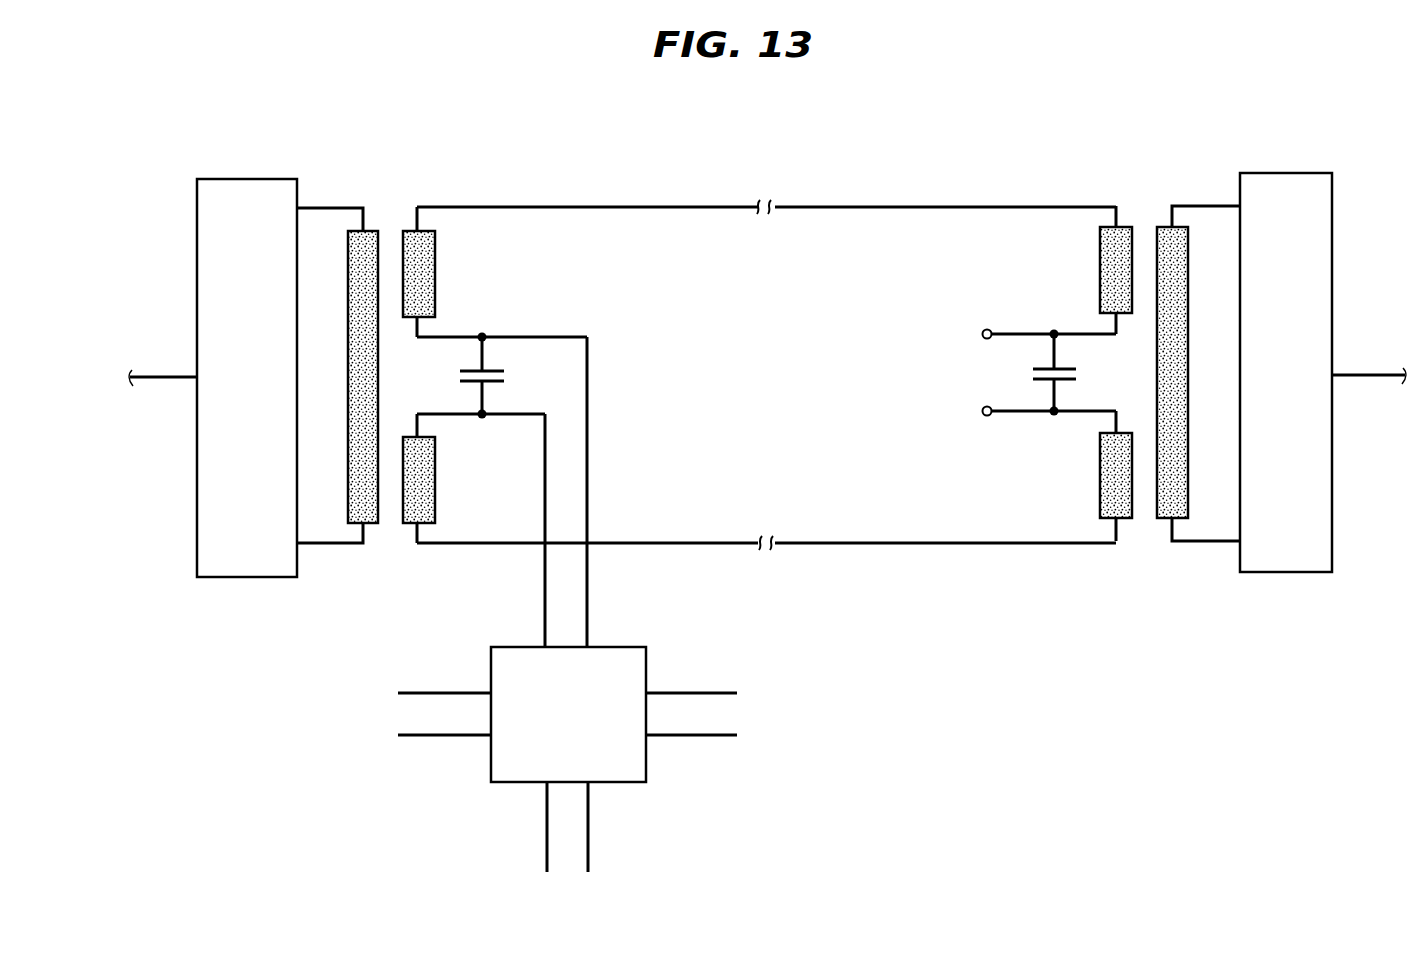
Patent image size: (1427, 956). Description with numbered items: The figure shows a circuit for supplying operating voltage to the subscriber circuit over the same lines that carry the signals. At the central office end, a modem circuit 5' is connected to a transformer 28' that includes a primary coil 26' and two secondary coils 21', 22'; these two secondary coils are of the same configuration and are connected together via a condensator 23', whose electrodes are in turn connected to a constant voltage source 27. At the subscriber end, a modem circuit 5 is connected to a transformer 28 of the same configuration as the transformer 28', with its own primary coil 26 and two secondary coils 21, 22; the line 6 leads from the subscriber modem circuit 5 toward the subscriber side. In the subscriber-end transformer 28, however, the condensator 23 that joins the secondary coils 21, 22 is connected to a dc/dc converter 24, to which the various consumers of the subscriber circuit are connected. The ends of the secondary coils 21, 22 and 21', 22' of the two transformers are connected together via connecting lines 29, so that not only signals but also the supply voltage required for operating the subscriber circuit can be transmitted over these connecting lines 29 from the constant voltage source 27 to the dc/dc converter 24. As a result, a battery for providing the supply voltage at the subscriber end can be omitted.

The modem circuit 5 is at (243, 378).
The modem circuit 5' is at (1290, 372).
The line 6 is at (163, 379).
The secondary coil 21 is at (458, 272).
The secondary coil 21' is at (1080, 270).
The secondary coil 22 is at (456, 478).
The secondary coil 22' is at (1075, 476).
The condensator 23 is at (502, 376).
The condensator 23' is at (1090, 373).
The DC/DC converter 24 is at (617, 647).
The coupling electrode 26 is at (340, 377).
The primary coil 26' is at (1197, 372).
The constant voltage source 27 is at (963, 353).
The transformer 28 is at (365, 150).
The transformer 28' is at (1117, 146).
The connecting lines 29 is at (630, 207).